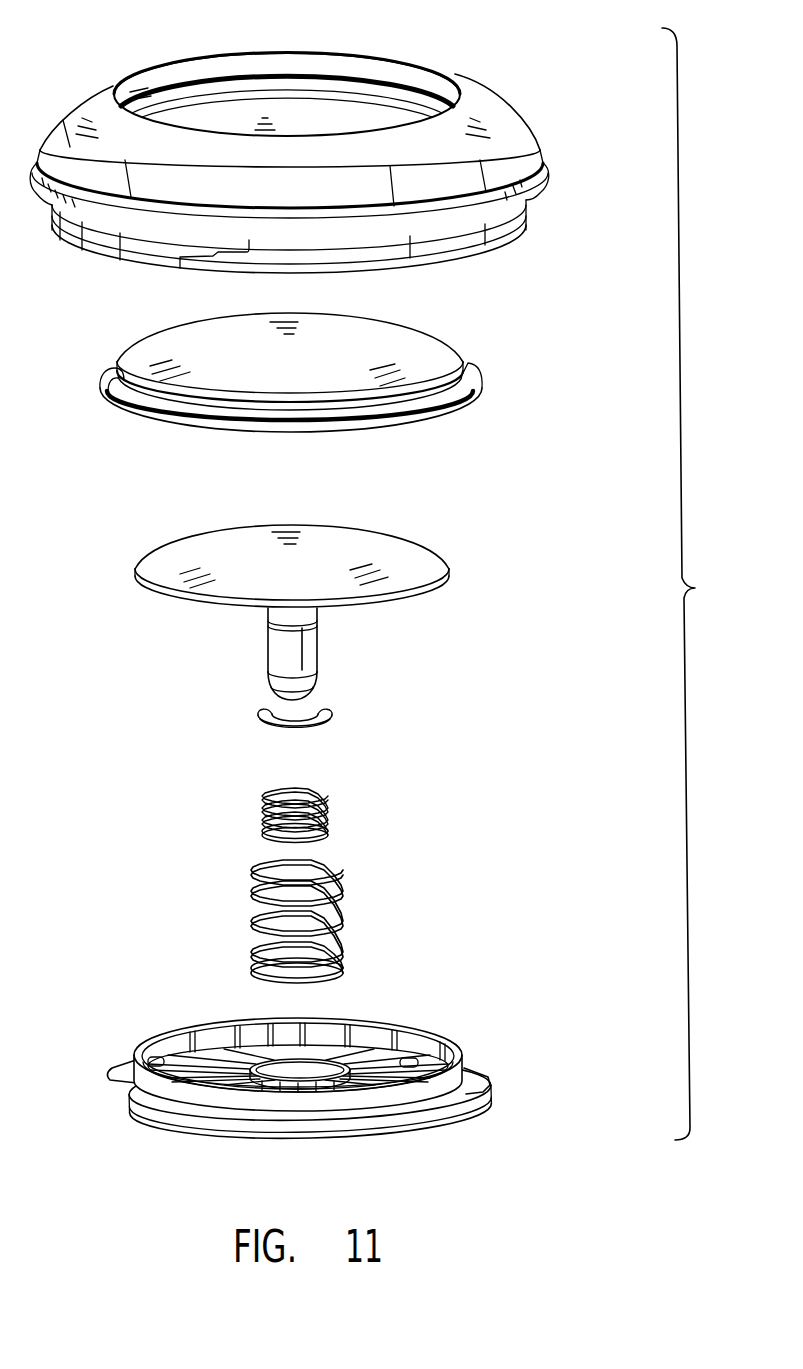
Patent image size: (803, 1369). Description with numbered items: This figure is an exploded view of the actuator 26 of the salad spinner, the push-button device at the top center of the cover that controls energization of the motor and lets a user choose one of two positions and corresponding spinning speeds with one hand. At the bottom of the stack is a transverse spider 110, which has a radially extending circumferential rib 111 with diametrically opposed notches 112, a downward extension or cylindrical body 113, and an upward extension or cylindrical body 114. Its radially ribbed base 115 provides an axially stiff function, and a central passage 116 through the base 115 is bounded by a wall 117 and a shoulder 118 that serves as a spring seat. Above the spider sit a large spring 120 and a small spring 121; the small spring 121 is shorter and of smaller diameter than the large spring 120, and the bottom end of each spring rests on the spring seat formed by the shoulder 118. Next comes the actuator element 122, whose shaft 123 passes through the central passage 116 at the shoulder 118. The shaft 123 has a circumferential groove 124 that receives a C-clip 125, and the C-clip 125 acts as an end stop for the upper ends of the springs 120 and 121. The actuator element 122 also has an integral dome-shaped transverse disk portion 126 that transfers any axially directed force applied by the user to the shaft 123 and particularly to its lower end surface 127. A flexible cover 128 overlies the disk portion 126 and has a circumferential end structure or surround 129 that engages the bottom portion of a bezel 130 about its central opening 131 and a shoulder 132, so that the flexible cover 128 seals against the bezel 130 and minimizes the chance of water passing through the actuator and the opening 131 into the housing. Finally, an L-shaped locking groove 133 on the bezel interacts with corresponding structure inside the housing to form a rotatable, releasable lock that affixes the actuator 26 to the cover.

The actuator 26 is at (694, 584).
The transverse spider 110 is at (335, 1155).
The circumferential rib 111 is at (464, 1094).
The notches 112 is at (483, 1066).
The downward extension or cylindrical body 113 is at (393, 1133).
The upward extension or cylindrical body 114 is at (474, 1068).
The radially ribbed base 115 is at (363, 1036).
The central passage 116 is at (312, 1067).
The wall 117 is at (254, 1071).
The shoulder 118 is at (292, 1066).
The large spring 120 is at (340, 897).
The small spring 121 is at (310, 796).
The actuator element 122 is at (464, 549).
The shaft 123 is at (301, 645).
The circumferential groove 124 is at (268, 624).
The C-clip 125 is at (323, 713).
The dome-shaped transverse disk portion 126 is at (333, 537).
The lower end surface 127 is at (283, 701).
The flexible cover 128 is at (435, 315).
The circumferential end structure or surround 129 is at (480, 379).
The bezel 130 is at (479, 65).
The central opening 131 is at (318, 112).
The shoulder 132 is at (517, 211).
The L-shaped locking groove 133 is at (160, 249).